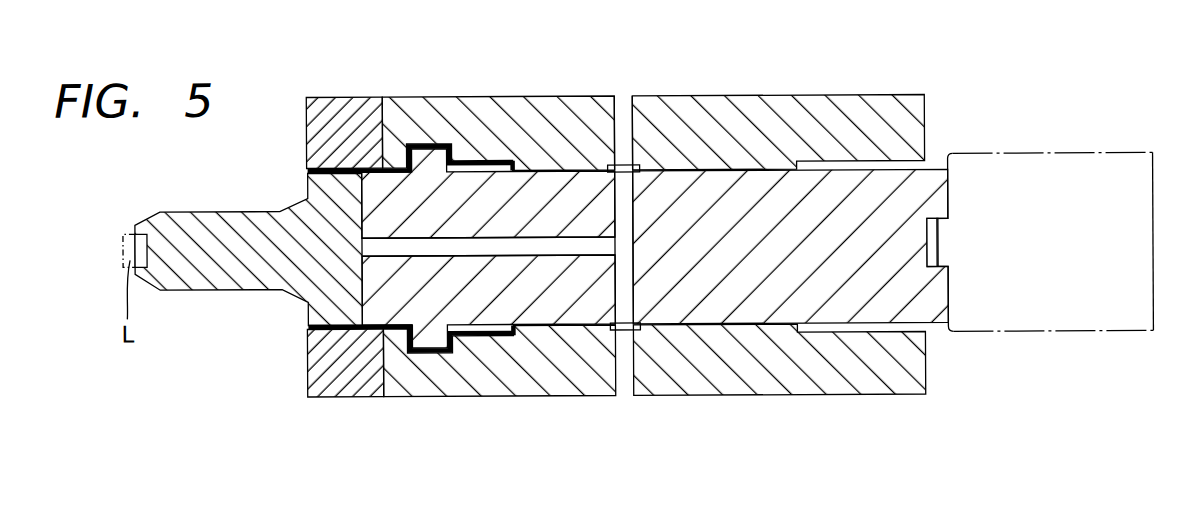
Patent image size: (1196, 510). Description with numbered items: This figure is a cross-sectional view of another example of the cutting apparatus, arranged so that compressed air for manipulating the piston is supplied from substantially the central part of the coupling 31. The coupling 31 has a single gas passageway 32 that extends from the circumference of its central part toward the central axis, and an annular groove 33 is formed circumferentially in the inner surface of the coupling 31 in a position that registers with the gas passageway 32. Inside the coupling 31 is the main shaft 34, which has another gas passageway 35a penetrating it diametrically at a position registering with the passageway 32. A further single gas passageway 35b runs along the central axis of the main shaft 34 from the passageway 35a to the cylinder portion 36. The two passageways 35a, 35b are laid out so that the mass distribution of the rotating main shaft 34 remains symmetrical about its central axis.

The coupling 31 is at (843, 383).
The gas passageway 32 is at (624, 108).
The annular groove 33 is at (607, 165).
The main shaft 34 is at (580, 313).
The gas passageway 35a is at (620, 273).
The gas passageway 35b is at (415, 248).
The cylinder portion 36 is at (323, 277).